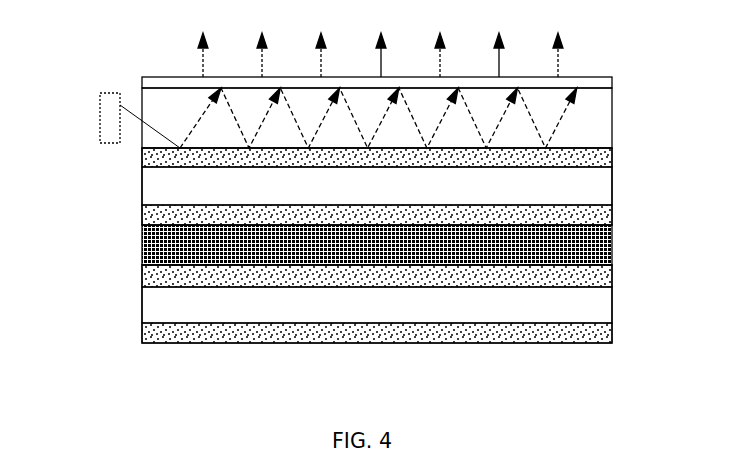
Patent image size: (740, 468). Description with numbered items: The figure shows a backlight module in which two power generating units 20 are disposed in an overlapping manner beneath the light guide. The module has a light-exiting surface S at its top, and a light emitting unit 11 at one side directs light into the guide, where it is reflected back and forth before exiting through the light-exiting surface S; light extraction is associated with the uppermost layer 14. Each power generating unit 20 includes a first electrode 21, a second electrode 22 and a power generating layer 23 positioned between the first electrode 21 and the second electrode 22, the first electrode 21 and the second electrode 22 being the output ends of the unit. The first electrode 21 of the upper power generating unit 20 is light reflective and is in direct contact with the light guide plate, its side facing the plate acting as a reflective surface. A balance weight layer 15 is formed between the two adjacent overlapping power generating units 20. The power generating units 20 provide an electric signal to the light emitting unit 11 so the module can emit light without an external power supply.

The light-exiting surface S is at (152, 68).
The light emitting unit 11 is at (99, 117).
The light extraction layer 14 is at (600, 77).
The balance weight layer 15 is at (612, 245).
The power generating unit 20 is at (627, 148).
The first electrode 21 is at (140, 159).
The second electrode 22 is at (142, 220).
The power generating layer 23 is at (147, 187).